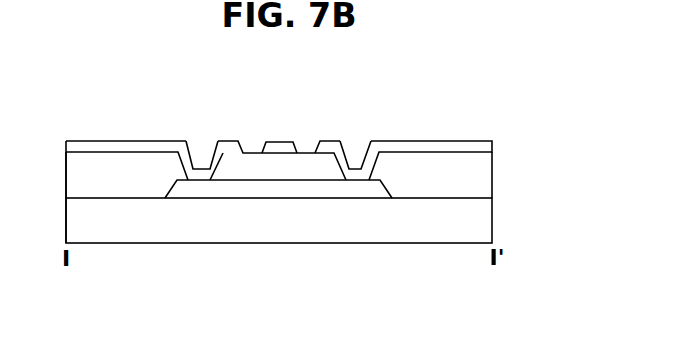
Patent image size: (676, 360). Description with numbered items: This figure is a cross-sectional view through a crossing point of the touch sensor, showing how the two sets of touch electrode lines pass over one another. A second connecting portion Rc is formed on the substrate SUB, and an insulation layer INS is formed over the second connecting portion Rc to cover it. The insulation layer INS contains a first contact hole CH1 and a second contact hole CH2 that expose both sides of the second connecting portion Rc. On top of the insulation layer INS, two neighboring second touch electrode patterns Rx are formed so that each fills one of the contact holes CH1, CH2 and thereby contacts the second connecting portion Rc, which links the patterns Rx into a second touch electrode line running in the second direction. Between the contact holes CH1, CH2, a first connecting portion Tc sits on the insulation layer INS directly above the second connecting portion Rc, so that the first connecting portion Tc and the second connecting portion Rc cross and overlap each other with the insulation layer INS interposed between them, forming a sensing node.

The second touch electrode pattern Rx is at (125, 147).
The first contact hole CH1 is at (201, 143).
The second contact hole CH2 is at (356, 143).
The first connecting portion Tc is at (278, 146).
The second connecting portion Rc is at (253, 190).
The substrate SUB is at (340, 230).
The insulation layer INS is at (432, 180).